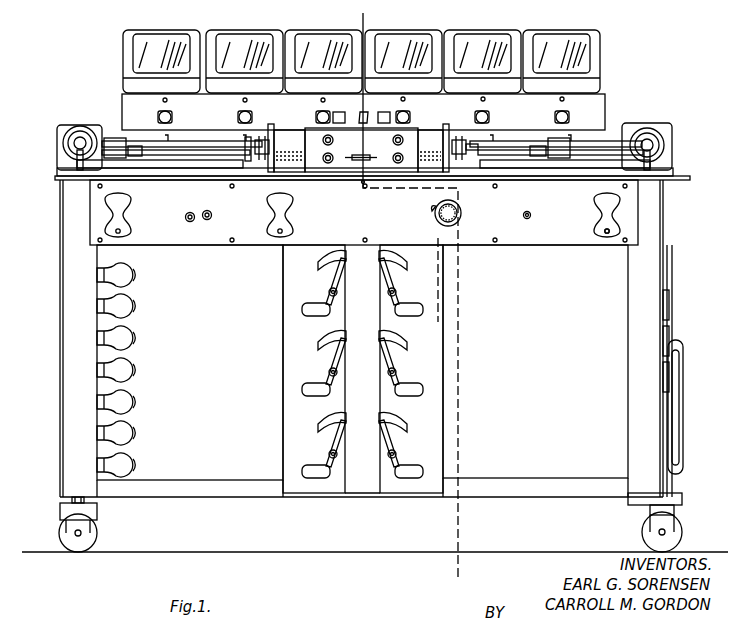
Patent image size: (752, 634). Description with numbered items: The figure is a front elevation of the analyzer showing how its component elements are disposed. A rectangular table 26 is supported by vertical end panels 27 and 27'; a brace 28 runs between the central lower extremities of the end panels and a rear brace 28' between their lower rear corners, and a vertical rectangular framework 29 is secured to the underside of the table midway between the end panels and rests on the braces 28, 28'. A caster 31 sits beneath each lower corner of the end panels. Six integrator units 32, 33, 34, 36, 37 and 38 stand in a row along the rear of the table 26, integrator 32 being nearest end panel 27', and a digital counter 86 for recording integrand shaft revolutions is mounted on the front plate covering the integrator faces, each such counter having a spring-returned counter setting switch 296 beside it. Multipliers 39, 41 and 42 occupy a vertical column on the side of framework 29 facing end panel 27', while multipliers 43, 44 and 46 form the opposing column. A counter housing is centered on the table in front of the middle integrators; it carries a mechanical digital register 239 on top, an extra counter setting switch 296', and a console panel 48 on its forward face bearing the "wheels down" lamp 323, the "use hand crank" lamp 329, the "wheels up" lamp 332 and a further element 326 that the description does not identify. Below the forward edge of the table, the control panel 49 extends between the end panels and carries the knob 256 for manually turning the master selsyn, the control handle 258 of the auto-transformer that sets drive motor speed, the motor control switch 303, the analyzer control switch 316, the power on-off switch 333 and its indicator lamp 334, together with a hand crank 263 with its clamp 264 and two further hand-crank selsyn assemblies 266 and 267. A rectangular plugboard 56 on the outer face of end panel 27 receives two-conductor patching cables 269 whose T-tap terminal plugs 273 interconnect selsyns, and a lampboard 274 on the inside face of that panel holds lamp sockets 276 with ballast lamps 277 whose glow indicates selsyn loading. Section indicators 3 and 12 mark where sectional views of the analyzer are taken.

The section line 3- 3 is at (363, 13).
The section line 12- 12 is at (438, 238).
The table 26 is at (670, 176).
The end panel 27 is at (144, 338).
The end panel 27' is at (541, 361).
The brace 28 is at (190, 502).
The rear brace 28' is at (535, 501).
The vertical rectangular framework 29 is at (362, 488).
The caster 31 is at (62, 531).
The integrator unit 32 is at (566, 27).
The integrator unit 33 is at (488, 27).
The integrator unit 34 is at (405, 27).
The integrator unit 36 is at (325, 27).
The integrator unit 37 is at (246, 27).
The integrator unit 38 is at (168, 27).
The multiplier 39 is at (417, 287).
The multiplier 41 is at (417, 365).
The multiplier 42 is at (417, 447).
The multiplier 43 is at (318, 285).
The multiplier 44 is at (318, 365).
The multiplier 46 is at (318, 447).
The console panel 48 is at (361, 150).
The control panel 49 is at (243, 230).
The plugboard 56 is at (665, 270).
The counter 86 is at (558, 117).
The mechanical digital register 239 is at (381, 126).
The knob 256 is at (459, 217).
The control handle 258 is at (461, 210).
The hand crank 263 is at (594, 224).
The clamp 264 is at (591, 207).
The hand-crank selsyn assembly 266 is at (272, 204).
The hand-crank selsyn assembly 267 is at (122, 208).
The patching cable 269 is at (683, 373).
The terminal plug 273 is at (668, 367).
The lampboard 274 is at (148, 347).
The lamp sockets 276 is at (97, 433).
The ballast lamps 277 is at (139, 402).
The counter setting toggle switches 296 is at (361, 117).
The extra switch 296' is at (311, 111).
The motor control switch 303 is at (352, 162).
The analyzer control switch 316 is at (526, 211).
The "wheels down" indicator lamp 323 is at (328, 164).
The jack 326 is at (399, 164).
The "use hand crank" indicator lamp 329 is at (399, 162).
The "wheels up" indicator lamp 332 is at (325, 162).
The power on-off switch 333 is at (206, 222).
The power on-off indicator lamp 334 is at (186, 218).